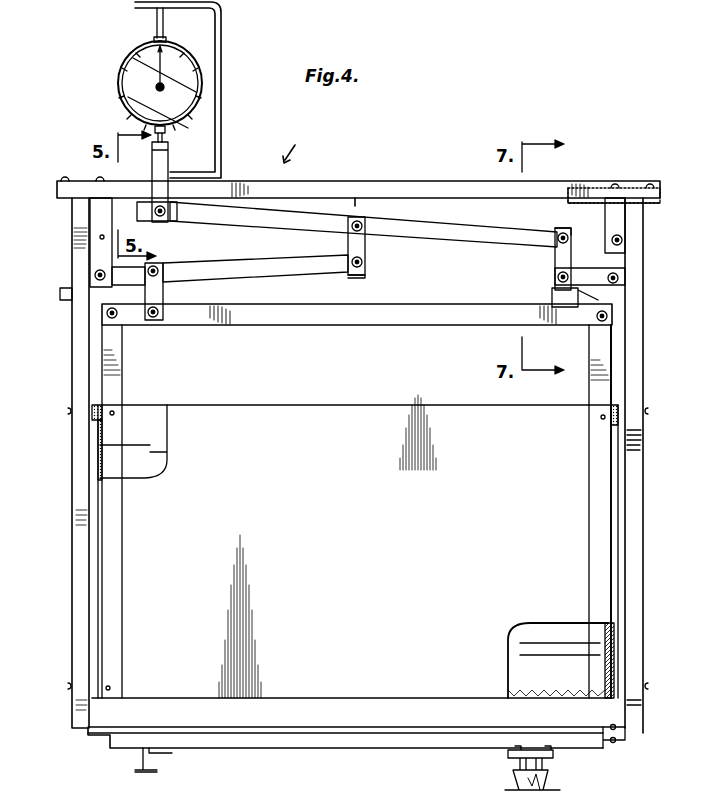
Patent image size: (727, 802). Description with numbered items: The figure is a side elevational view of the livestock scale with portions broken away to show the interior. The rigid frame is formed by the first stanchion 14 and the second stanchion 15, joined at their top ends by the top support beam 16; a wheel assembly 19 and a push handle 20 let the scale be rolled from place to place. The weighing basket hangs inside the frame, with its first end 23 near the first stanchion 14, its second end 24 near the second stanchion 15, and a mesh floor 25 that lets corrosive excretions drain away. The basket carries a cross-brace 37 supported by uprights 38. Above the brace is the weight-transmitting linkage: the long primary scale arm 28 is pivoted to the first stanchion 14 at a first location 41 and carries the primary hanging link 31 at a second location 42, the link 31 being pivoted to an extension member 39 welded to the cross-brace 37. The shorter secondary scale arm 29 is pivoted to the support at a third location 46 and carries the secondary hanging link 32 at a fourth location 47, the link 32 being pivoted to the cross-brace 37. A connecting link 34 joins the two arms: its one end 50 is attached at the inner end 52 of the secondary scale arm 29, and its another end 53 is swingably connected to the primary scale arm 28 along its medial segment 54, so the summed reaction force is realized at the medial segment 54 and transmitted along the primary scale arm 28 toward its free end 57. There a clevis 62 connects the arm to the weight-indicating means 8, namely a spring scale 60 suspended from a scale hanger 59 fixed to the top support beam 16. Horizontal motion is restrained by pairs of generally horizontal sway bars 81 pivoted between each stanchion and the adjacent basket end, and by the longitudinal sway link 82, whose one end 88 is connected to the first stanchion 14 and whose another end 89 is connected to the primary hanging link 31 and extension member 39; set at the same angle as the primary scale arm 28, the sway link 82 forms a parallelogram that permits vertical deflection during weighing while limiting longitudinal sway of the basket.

The weight-indicating means 8 is at (131, 53).
The spring scale 60 is at (120, 82).
The scale hanger 59 is at (222, 132).
The clevis 62 is at (170, 170).
The free end 57 is at (128, 200).
The top support beam 16 is at (57, 189).
The second stanchion 15 is at (72, 568).
The first stanchion 14 is at (645, 550).
The third location 46 is at (96, 288).
The fourth location 47 is at (157, 262).
The secondary hanging link 32 is at (163, 295).
The secondary scale arm 29 is at (258, 262).
The primary scale arm 28 is at (462, 240).
The another end 53 is at (362, 200).
The medial segment 54 is at (346, 230).
The inner end 52 is at (346, 274).
The connecting link 34 is at (365, 250).
The one end 50 is at (365, 280).
The primary hanging link 31 is at (555, 257).
The second location 42 is at (556, 232).
The first location 41 is at (606, 232).
The one end 88 is at (620, 280).
The another end 89 is at (553, 270).
The extension member 39 is at (552, 298).
The longitudinal sway link 82 is at (598, 290).
The cross-brace 37 is at (312, 320).
The uprights 38 is at (122, 398).
The second end 24 is at (122, 550).
The first end 23 is at (592, 462).
The floor 25 is at (578, 690).
The sway bars 81 is at (96, 405).
The push handle 20 is at (58, 300).
The wheel assembly 19 is at (544, 778).